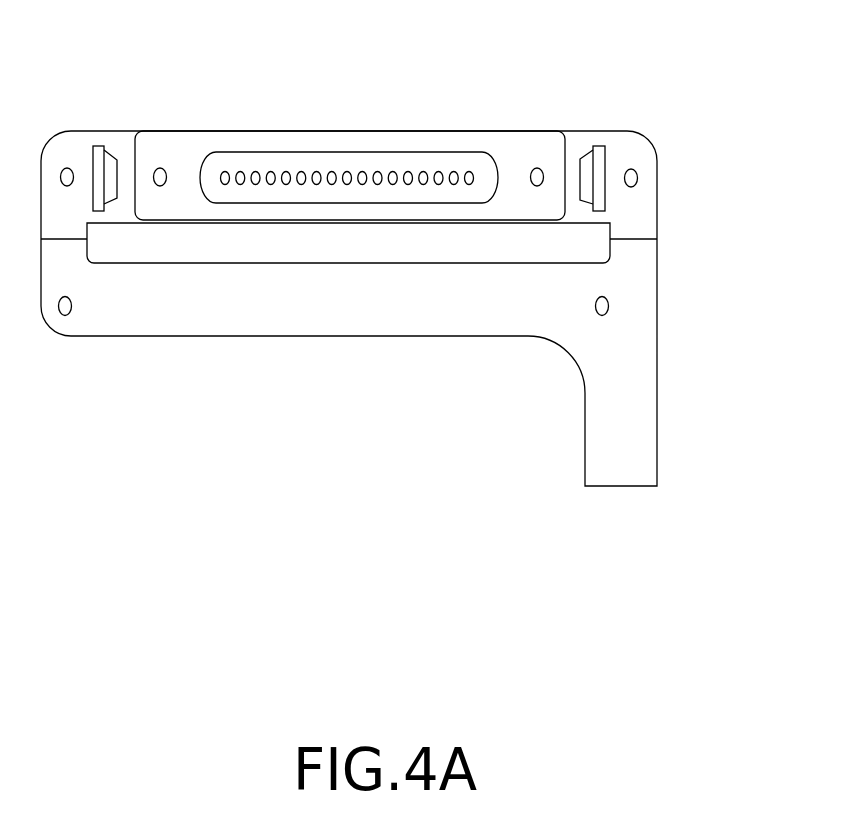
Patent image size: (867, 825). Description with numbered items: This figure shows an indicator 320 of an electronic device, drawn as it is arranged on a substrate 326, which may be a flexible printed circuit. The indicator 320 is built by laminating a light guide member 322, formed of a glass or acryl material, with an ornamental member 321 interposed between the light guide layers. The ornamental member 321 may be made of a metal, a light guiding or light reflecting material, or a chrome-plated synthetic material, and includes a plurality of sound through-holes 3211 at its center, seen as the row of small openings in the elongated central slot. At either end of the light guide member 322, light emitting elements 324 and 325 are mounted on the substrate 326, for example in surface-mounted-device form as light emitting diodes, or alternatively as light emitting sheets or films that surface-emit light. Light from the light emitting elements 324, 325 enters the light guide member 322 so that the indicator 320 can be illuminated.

The indicator 320 is at (392, 253).
The ornamental member 321 is at (433, 163).
The sound through-holes 3211 is at (366, 177).
The light guide member 322 is at (503, 150).
The light emitting element 324 is at (598, 153).
The light emitting element 325 is at (113, 162).
The substrate 326 is at (647, 178).